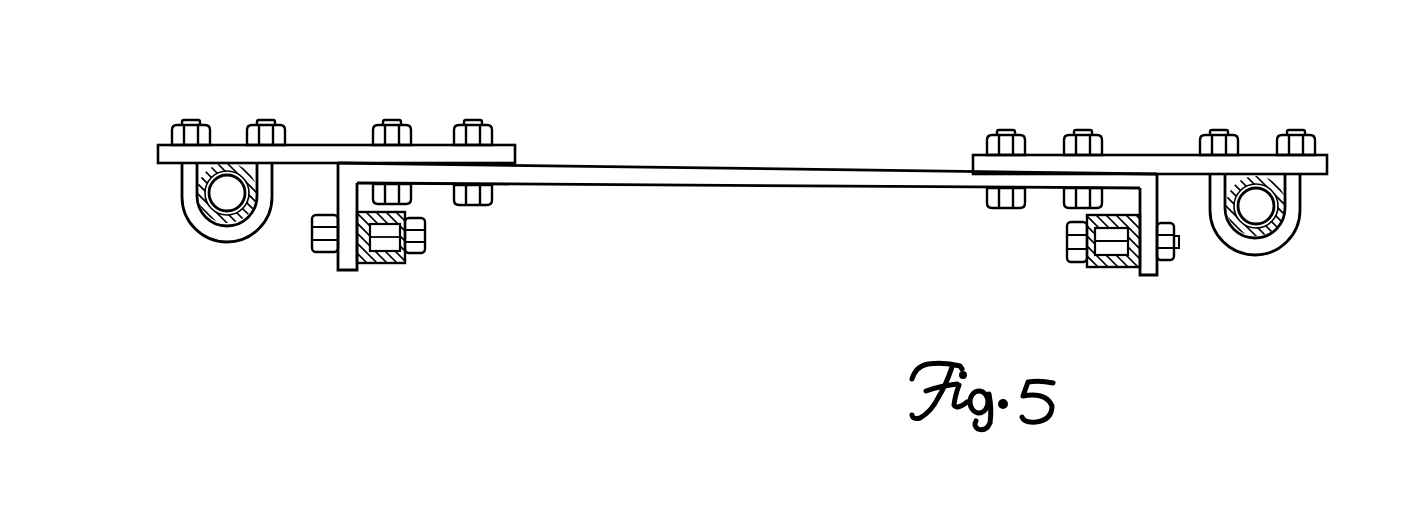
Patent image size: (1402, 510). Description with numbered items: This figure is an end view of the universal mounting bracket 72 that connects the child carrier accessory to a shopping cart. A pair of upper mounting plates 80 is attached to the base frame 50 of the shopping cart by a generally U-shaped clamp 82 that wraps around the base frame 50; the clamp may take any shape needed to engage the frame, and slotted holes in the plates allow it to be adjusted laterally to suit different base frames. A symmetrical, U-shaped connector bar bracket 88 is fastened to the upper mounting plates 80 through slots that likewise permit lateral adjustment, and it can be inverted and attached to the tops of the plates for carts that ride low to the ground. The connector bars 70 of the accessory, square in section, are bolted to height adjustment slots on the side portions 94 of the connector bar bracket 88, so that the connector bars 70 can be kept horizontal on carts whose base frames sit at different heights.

The universal mounting bracket 72 is at (1303, 86).
The upper mounting plates 80 is at (315, 143).
The connector bar bracket 88 is at (738, 190).
The side portions 94 is at (337, 187).
The connector bars 70 is at (383, 257).
The U-shaped clamp 82 is at (188, 222).
The base frame 50 is at (218, 188).